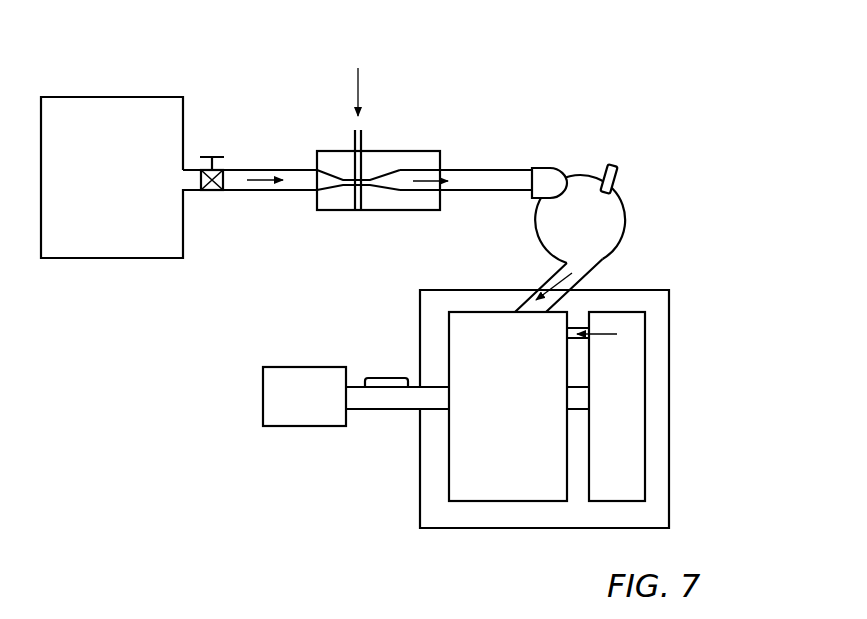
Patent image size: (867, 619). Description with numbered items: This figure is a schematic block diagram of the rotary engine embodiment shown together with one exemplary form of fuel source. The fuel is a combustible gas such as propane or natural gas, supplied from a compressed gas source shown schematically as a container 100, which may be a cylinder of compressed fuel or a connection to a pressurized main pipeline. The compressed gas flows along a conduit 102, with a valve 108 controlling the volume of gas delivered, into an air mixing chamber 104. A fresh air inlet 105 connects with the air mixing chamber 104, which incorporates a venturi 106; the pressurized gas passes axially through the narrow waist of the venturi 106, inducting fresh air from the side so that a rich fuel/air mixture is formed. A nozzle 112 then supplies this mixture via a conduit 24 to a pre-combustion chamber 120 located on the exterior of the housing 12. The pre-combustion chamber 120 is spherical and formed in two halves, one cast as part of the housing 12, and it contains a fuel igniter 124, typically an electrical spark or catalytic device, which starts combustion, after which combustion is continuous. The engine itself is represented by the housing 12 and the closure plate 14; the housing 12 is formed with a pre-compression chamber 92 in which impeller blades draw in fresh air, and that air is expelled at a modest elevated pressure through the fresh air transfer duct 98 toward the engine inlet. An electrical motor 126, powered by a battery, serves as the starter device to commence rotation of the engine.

The container 100 is at (137, 97).
The conduit 102 is at (270, 191).
The valve 108 is at (213, 191).
The air mixing chamber 104 is at (393, 151).
The venturi 106 is at (370, 193).
The fresh air inlet 105 is at (352, 137).
The conduit 24 is at (478, 170).
The nozzle 112 is at (553, 168).
The pre-combustion chamber 120 is at (580, 230).
The fuel igniter 124 is at (620, 173).
The housing 12 is at (490, 290).
The closure plate 14 is at (432, 442).
The pre-compression chamber 92 is at (672, 347).
The fresh air transfer duct 98 is at (590, 331).
The electrical motor 126 is at (302, 427).